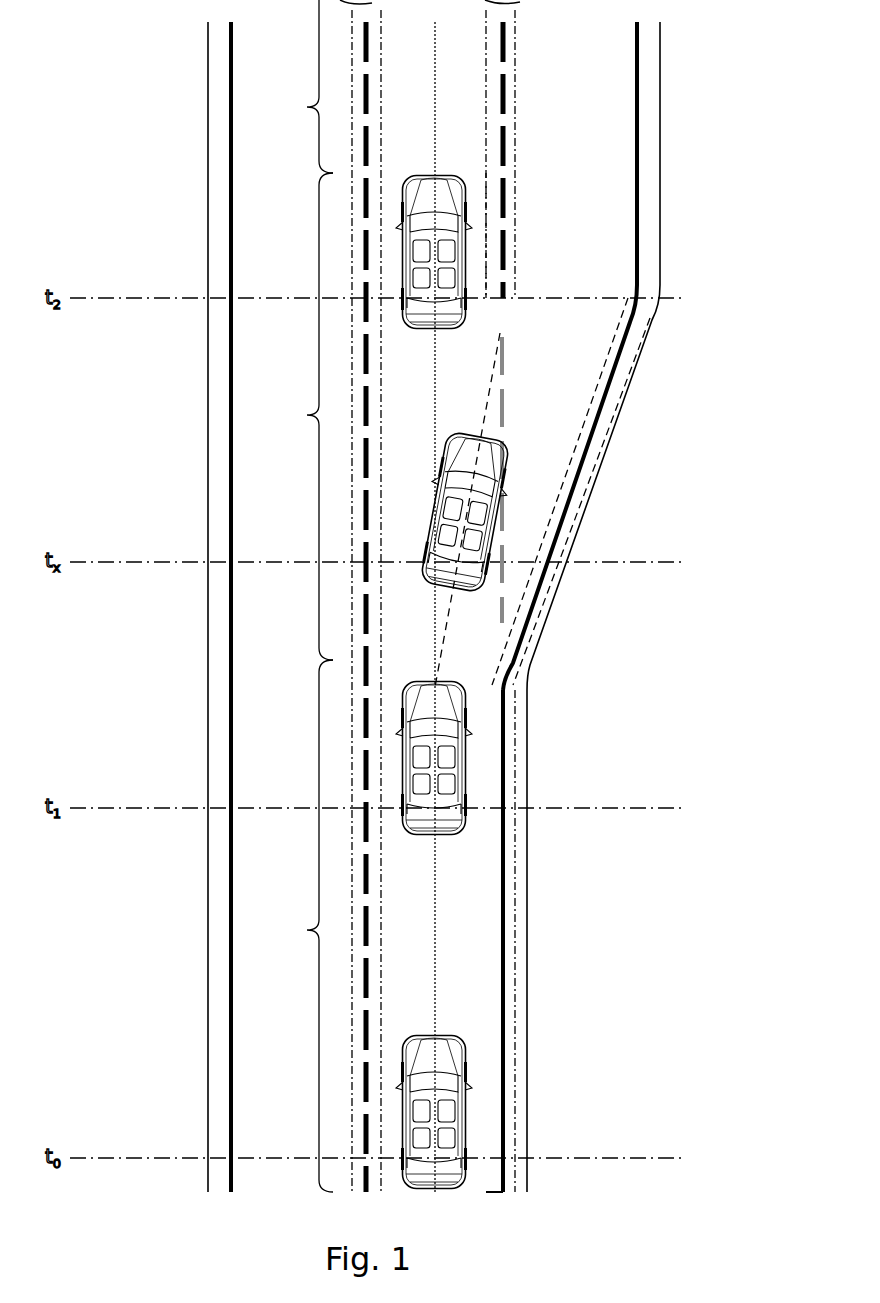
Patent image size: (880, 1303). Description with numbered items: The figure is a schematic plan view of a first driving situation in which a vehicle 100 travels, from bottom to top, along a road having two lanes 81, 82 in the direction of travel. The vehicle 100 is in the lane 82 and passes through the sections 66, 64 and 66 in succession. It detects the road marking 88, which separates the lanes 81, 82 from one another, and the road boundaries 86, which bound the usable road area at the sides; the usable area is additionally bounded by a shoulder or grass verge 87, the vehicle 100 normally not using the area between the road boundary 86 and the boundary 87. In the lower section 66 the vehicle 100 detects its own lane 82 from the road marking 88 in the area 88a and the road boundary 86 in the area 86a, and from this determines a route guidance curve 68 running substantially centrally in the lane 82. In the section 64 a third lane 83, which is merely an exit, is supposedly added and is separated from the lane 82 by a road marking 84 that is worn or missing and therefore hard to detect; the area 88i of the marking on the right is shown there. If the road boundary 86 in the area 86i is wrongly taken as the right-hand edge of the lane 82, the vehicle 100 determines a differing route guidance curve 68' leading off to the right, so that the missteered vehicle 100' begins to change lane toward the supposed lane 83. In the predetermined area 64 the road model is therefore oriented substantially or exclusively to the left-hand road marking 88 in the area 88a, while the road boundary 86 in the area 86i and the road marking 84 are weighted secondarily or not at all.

The boundary 87 is at (208, 263).
The road boundary 86 is at (231, 607).
The area of the road boundary 86i is at (593, 470).
The area of the road boundary 86a is at (517, 1045).
The area of the road marking 88a is at (352, 58).
The road marking 88 is at (366, 1088).
The lane marking segment 88i is at (515, 248).
The route guidance curve 68 is at (504, 607).
The route guidance curve 68' is at (514, 510).
The road marking 84 is at (503, 362).
The vehicle 100 is at (495, 671).
The vehicle 100' is at (535, 512).
The lane 81 is at (290, 949).
The lane 82 is at (450, 949).
The third lane 83 is at (570, 260).
The section 66 is at (301, 486).
The section 64 is at (301, 415).